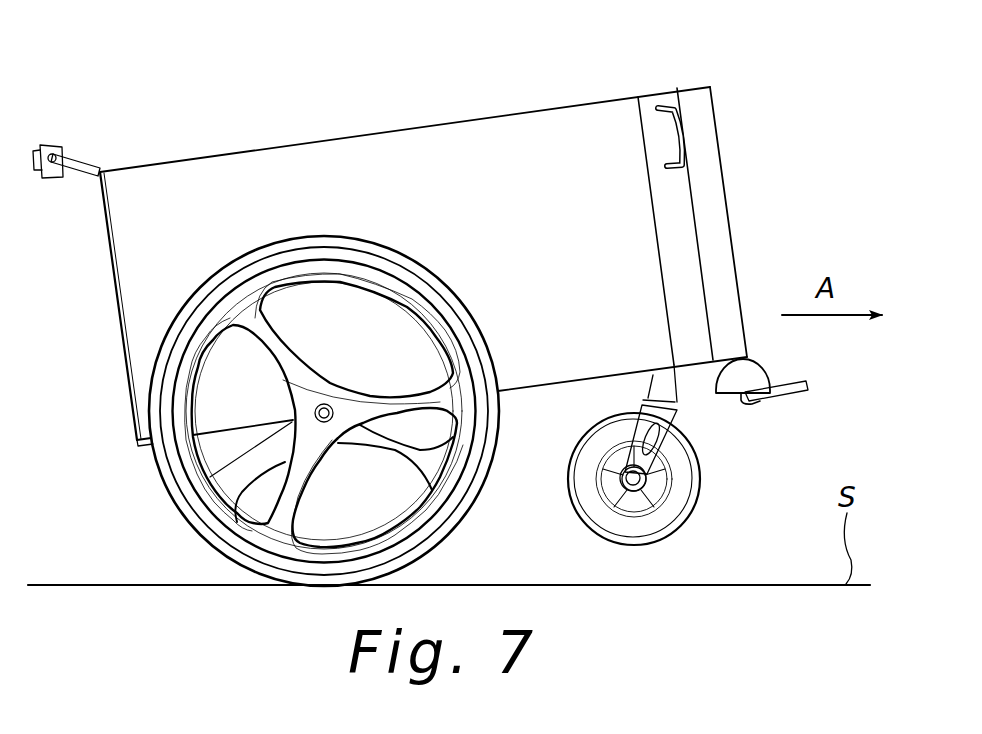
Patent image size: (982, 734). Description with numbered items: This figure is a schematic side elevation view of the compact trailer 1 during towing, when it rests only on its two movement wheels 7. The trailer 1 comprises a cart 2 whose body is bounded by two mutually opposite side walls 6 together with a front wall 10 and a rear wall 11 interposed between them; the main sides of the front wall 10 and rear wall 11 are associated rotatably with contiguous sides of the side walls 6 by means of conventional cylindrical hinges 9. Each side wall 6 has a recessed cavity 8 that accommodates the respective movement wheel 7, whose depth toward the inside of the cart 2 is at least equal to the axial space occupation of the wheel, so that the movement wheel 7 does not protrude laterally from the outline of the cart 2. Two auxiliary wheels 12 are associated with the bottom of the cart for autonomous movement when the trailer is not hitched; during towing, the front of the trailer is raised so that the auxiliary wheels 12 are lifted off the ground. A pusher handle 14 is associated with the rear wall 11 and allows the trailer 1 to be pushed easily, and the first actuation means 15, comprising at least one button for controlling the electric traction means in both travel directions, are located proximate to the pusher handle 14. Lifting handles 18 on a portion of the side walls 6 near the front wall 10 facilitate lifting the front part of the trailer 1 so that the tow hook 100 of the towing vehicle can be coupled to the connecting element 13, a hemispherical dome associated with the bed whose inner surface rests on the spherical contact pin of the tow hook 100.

The compact trailer 1 is at (757, 108).
The cart 2 is at (107, 335).
The side walls 6 is at (498, 150).
The movement wheels 7 is at (172, 513).
The recessed cavity 8 is at (148, 443).
The cylindrical hinges 9 is at (697, 173).
The front wall 10 is at (705, 212).
The rear wall 11 is at (112, 301).
The auxiliary wheels 12 is at (697, 505).
The connecting element 13 is at (770, 368).
The pusher handle 14 is at (80, 168).
The first actuation means 15 is at (53, 147).
The lifting handles 18 is at (680, 133).
The tow hook 100 is at (772, 396).